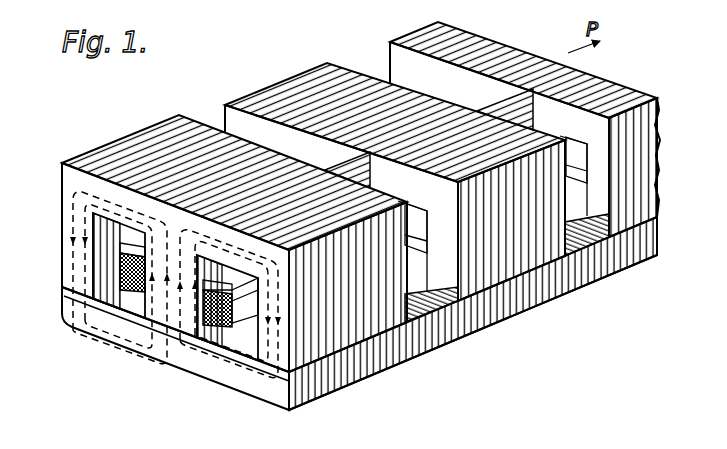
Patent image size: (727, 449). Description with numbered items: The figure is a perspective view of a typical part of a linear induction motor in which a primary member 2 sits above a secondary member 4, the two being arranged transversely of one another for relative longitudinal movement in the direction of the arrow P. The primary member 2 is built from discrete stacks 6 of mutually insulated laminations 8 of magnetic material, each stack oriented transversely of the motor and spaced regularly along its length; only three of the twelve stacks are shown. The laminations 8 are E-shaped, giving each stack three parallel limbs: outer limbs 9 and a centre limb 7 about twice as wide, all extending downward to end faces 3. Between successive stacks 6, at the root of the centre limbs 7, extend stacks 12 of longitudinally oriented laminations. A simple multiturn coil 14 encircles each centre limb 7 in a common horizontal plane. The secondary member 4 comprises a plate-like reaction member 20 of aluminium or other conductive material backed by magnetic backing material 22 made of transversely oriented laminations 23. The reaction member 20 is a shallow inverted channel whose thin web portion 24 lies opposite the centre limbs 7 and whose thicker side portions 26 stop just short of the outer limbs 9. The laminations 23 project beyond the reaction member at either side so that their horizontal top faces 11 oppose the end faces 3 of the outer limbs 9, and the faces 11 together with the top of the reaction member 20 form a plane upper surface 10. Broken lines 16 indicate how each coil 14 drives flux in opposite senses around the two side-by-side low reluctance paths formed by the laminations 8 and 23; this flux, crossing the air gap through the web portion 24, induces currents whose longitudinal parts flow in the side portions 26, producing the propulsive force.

The primary member 2 is at (342, 230).
The end faces 3 is at (341, 278).
The secondary member 4 is at (296, 400).
The stacks 6 is at (100, 148).
The centre limbs 7 is at (140, 316).
The laminations 8 is at (152, 131).
The outer limbs 9 is at (72, 226).
The plane upper surface 10 is at (243, 352).
The horizontal top faces 11 is at (83, 300).
The stacks of longitudinally orientated laminations 12 is at (258, 146).
The multiturn coils 14 is at (212, 332).
The broken lines 16 is at (72, 194).
The reaction member 20 is at (253, 342).
The magnetic backing material 22 is at (335, 392).
The laminations 23 is at (455, 339).
The web portion 24 is at (158, 328).
The side portions 26 is at (108, 326).